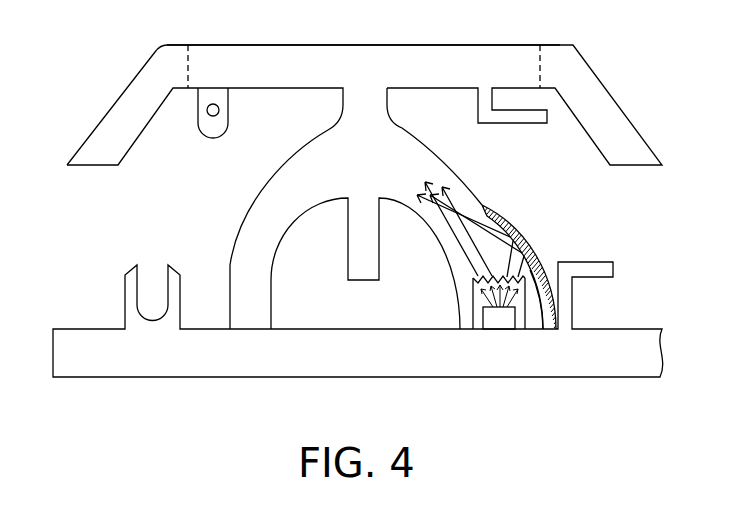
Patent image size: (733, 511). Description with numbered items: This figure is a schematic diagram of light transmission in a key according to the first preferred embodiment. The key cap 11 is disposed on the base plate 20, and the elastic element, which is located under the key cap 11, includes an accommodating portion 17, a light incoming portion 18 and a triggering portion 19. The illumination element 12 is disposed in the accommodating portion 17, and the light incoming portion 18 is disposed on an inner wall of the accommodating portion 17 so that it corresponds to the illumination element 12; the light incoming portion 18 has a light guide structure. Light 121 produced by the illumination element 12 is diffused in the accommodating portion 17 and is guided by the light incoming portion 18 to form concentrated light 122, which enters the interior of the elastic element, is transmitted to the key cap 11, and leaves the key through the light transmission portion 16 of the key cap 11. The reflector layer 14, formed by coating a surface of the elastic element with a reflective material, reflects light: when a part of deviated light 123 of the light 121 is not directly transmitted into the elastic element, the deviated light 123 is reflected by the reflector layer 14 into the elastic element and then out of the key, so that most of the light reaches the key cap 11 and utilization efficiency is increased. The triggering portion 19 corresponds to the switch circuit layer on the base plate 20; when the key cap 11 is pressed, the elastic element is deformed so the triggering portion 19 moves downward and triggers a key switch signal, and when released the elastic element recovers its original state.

The key cap 11 is at (123, 110).
The light transmission portion 16 is at (457, 55).
The triggering portion 19 is at (365, 280).
The base plate 20 is at (97, 342).
The illumination element 12 is at (495, 321).
The accommodating portion 17 is at (478, 318).
The light incoming portion 18 is at (476, 283).
The reflector layer 14 is at (506, 213).
The light 121 is at (520, 293).
The deviated light 123 is at (522, 270).
The concentrated light 122 is at (420, 198).